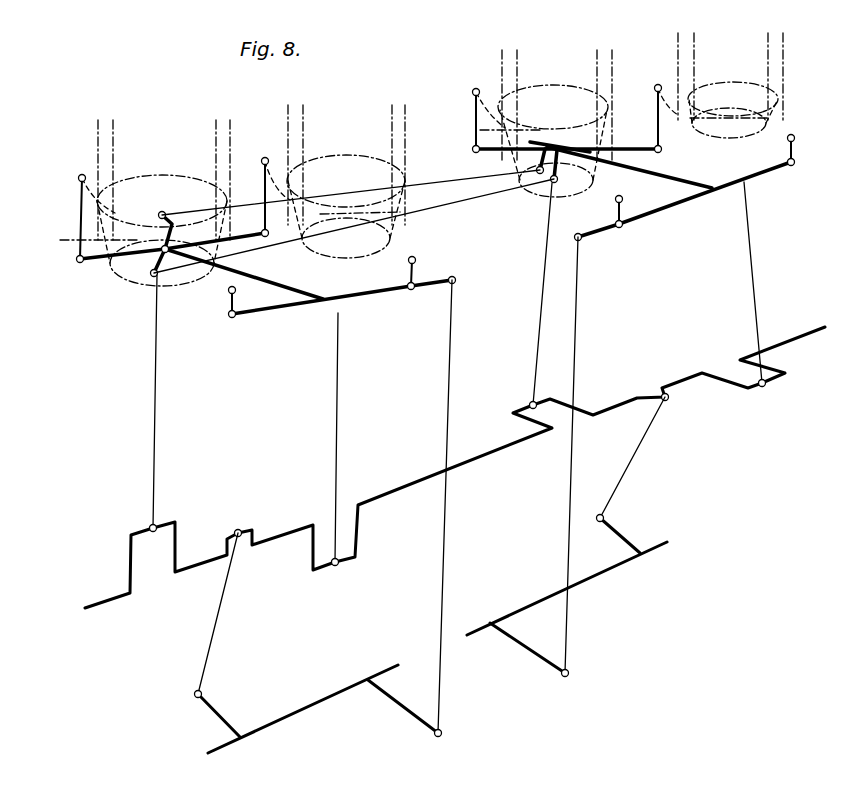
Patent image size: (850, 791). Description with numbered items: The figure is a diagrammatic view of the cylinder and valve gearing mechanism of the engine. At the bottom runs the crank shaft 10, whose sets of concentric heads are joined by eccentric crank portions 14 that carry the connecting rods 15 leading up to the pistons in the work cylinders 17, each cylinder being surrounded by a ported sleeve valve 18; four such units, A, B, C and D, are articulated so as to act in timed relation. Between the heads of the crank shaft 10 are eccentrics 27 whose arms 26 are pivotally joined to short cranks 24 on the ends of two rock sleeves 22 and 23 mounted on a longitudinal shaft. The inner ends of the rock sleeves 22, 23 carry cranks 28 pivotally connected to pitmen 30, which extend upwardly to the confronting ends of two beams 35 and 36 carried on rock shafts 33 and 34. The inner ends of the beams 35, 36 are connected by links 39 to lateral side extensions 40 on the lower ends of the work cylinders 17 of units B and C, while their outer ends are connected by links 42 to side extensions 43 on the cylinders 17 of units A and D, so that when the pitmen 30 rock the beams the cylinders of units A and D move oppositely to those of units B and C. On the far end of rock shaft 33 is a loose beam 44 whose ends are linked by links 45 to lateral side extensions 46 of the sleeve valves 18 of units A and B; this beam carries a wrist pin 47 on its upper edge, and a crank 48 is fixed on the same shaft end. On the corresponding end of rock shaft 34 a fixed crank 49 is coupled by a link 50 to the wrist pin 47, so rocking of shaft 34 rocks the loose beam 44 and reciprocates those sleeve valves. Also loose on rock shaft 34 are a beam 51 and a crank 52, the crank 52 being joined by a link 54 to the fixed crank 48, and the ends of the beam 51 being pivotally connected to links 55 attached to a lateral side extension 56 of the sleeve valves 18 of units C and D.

The crank shaft 10 is at (402, 485).
The crank portions 14 is at (141, 523).
The connecting rods 15 is at (156, 440).
The work cylinders 17 is at (803, 118).
The sleeve valves 18 is at (230, 130).
The rock sleeve 22 is at (303, 715).
The rock sleeve 23 is at (600, 580).
The short cranks 24 is at (218, 718).
The arms 26 is at (220, 625).
The eccentrics 27 is at (242, 528).
The cranks 28 is at (400, 708).
The pitmen 30 is at (450, 553).
The rock shaft 33 is at (300, 292).
The rock shaft 34 is at (680, 182).
The beam 35 is at (296, 318).
The beam 36 is at (660, 222).
The links 39 is at (452, 277).
The lateral side extensions 40 is at (405, 262).
The links 42 is at (232, 305).
The side extensions 43 is at (160, 304).
The loose beam 44 is at (130, 263).
The links 45 is at (80, 208).
The lateral side extensions 46 is at (82, 178).
The wrist pin 47 is at (155, 240).
The crank 48 is at (152, 272).
The crank 49 is at (552, 183).
The link 50 is at (412, 200).
The beam 51 is at (505, 148).
The crank 52 is at (538, 168).
The link 54 is at (255, 246).
The links 55 is at (476, 133).
The lateral side extension 56 is at (478, 92).